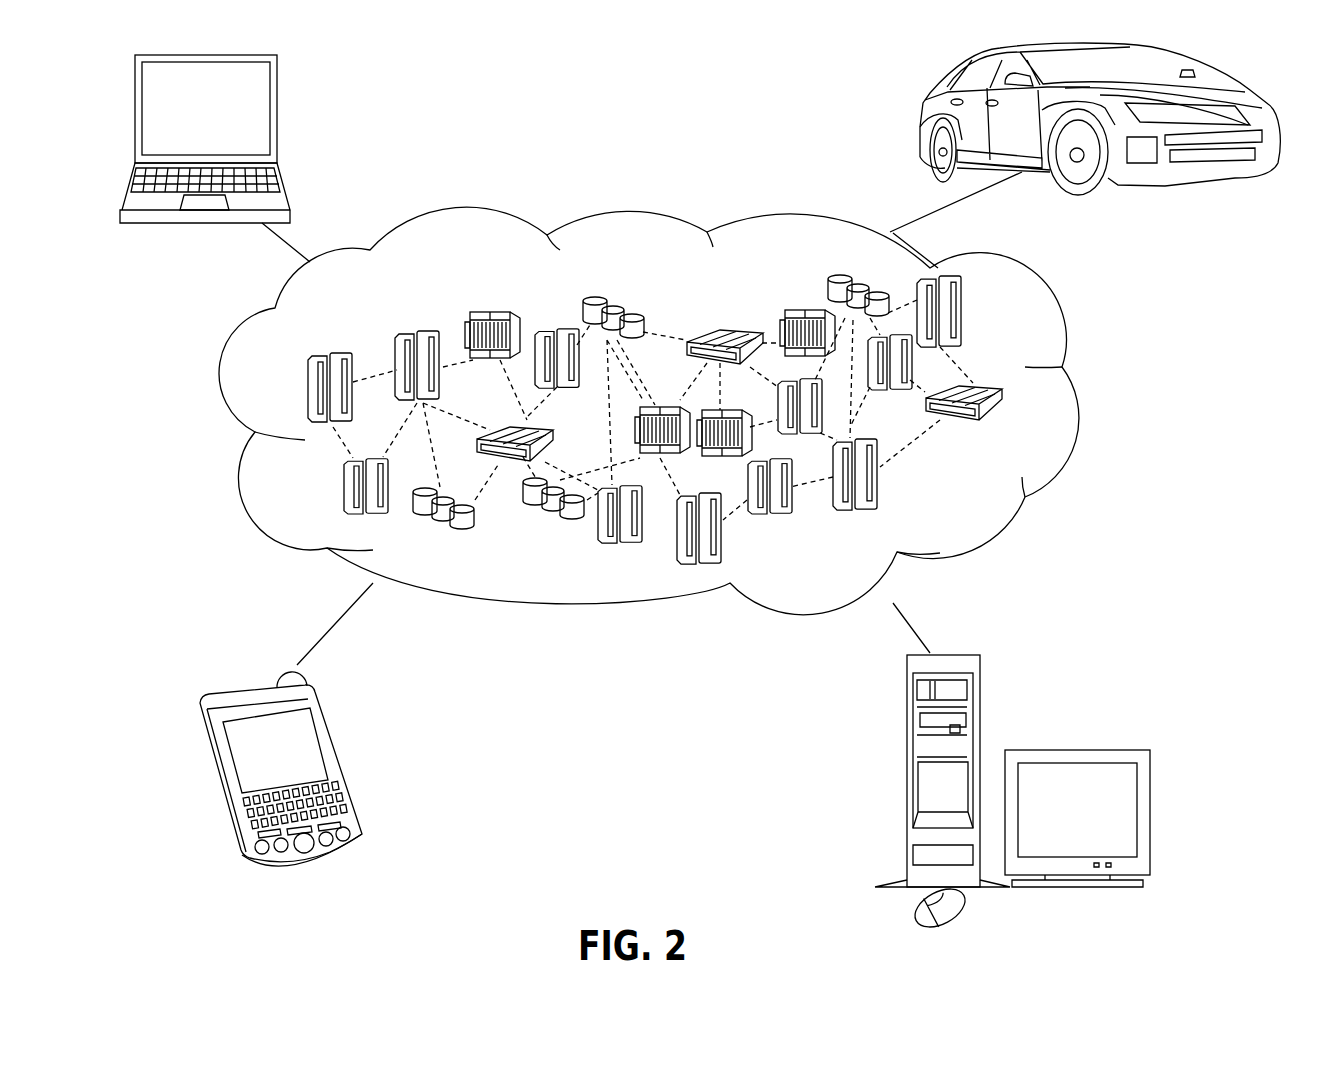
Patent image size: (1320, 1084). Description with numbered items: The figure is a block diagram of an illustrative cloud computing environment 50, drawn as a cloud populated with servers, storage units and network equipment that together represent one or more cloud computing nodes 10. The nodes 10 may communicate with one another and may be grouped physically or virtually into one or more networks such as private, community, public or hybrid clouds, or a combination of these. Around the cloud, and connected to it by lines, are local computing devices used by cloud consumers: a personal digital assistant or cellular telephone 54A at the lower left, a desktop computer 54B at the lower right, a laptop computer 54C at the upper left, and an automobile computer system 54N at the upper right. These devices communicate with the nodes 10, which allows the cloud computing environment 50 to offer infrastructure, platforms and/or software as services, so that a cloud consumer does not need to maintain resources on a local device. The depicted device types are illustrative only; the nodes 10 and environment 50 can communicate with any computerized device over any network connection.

The cloud computing node 10 is at (700, 489).
The cloud computing environment 50 is at (1080, 402).
The personal digital assistant or cellular telephone 54A is at (330, 732).
The desktop computer 54B is at (905, 717).
The laptop computer 54C is at (277, 92).
The automobile computer system 54N is at (920, 110).